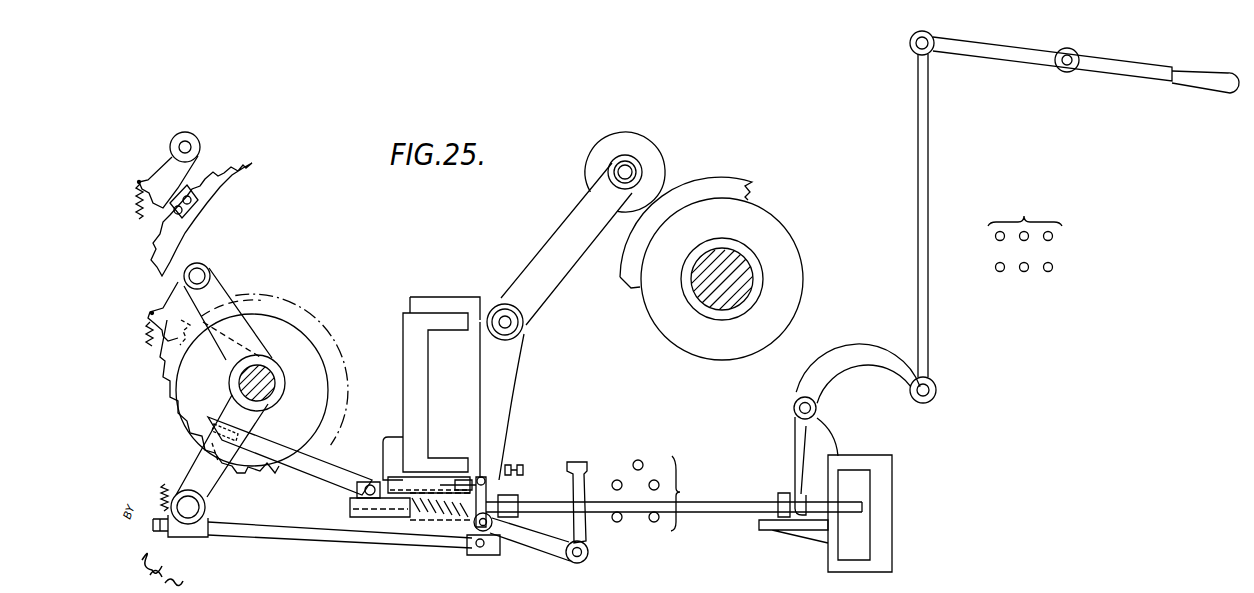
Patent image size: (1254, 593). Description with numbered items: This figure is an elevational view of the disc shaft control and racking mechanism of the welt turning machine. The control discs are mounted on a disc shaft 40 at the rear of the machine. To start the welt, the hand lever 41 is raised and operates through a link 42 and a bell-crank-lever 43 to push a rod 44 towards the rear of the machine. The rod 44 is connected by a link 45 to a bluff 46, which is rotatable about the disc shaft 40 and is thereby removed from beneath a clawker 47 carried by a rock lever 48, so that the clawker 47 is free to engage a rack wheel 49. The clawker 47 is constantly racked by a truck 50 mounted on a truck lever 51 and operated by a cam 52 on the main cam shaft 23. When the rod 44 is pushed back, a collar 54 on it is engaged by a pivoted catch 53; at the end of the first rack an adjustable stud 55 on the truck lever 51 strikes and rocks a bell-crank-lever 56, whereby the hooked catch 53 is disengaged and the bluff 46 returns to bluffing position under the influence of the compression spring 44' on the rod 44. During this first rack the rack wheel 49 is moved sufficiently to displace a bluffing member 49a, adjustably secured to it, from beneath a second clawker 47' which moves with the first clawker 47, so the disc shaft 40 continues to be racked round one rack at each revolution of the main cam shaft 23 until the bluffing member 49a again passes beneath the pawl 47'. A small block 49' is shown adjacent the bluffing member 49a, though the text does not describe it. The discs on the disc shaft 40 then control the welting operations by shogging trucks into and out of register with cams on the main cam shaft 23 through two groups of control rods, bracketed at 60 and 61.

The main cam shaft 23 is at (716, 264).
The disc shaft 40 is at (250, 384).
The hand lever 41 is at (1225, 90).
The link 42 is at (926, 130).
The bell-crank-lever 43 is at (846, 356).
The rod 44 is at (689, 513).
The compression spring 44' is at (340, 529).
The link 45 is at (310, 466).
The bluff 46 is at (185, 350).
The clawker 47 is at (152, 314).
The second clawker 47' is at (168, 175).
The rock lever 48 is at (208, 297).
The rack wheel 49 is at (246, 383).
The bluffing member 49a is at (180, 190).
The block 49' is at (209, 205).
The truck 50 is at (586, 157).
The truck lever 51 is at (572, 228).
The cam 52 is at (721, 183).
The pivoted catch 53 is at (498, 492).
The collar 54 is at (518, 495).
The adjustable stud 55 is at (516, 465).
The bell-crank-lever 56 is at (588, 466).
The group of control rods 60 is at (655, 493).
The group of control rods 61 is at (1025, 236).